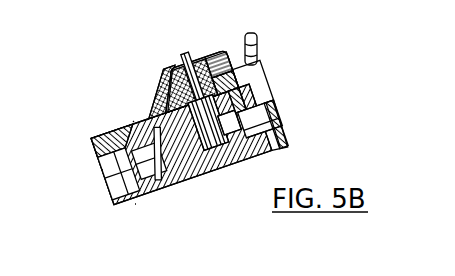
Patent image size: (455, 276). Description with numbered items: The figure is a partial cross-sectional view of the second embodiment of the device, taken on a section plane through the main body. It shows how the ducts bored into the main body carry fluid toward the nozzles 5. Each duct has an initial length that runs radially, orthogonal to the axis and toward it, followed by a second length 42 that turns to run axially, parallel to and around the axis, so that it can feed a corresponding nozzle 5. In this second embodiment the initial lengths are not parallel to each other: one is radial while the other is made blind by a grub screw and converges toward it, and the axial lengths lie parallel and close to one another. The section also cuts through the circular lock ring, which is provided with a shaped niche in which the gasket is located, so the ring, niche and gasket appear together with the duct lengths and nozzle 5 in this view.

The nozzle 5 is at (198, 50).
The second length 42 is at (187, 108).